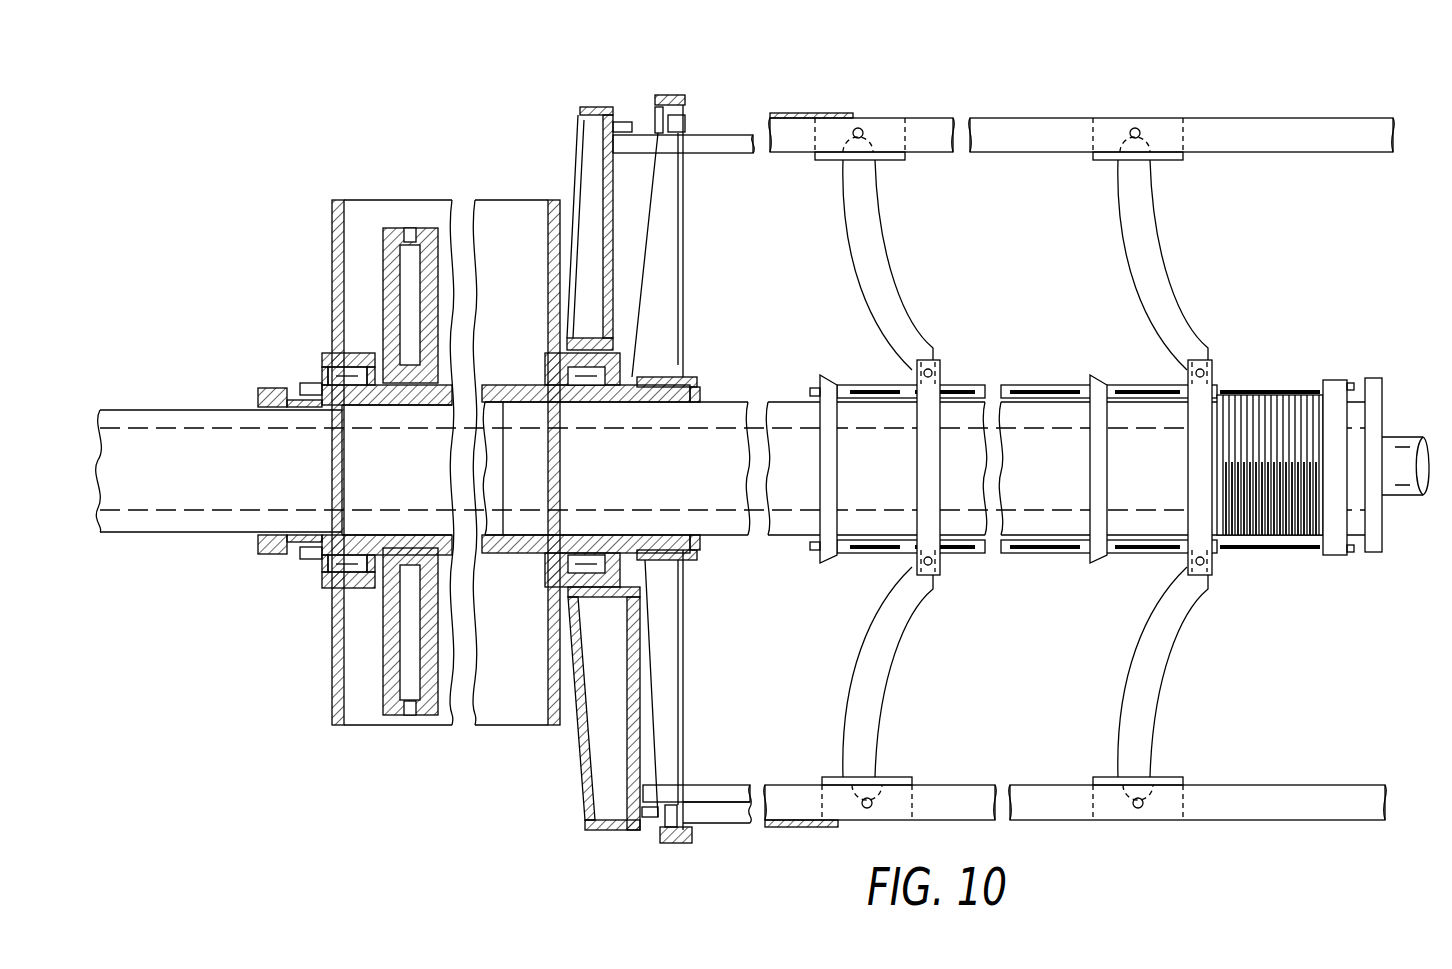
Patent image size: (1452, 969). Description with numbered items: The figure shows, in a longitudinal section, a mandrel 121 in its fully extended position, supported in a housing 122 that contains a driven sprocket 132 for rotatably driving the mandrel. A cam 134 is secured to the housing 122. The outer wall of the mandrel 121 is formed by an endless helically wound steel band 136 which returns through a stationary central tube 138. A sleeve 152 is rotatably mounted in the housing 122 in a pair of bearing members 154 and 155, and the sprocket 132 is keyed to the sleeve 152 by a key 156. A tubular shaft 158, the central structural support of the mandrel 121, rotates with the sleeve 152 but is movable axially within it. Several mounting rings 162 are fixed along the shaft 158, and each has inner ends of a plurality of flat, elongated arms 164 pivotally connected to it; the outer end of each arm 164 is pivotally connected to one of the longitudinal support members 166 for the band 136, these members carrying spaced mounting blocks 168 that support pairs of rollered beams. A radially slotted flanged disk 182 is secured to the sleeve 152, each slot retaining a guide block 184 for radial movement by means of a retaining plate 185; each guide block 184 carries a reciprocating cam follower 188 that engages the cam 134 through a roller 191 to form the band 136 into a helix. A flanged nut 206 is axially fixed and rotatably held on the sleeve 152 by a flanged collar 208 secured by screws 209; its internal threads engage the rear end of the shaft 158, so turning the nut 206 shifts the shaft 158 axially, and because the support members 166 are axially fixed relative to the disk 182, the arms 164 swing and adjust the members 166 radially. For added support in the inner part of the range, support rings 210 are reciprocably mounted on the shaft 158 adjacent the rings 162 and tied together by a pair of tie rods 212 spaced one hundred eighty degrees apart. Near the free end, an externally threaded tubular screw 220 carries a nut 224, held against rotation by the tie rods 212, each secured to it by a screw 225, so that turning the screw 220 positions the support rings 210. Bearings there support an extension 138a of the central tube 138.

The mandrel 121 is at (953, 102).
The housing 122 is at (495, 200).
The driven sprocket 132 is at (384, 230).
The cam 134 is at (583, 107).
The endless helically wound steel band 136 is at (793, 113).
The stationary central tube 138 is at (98, 420).
The extension of the stationary central tube 138a is at (1392, 440).
The sleeve 152 is at (546, 380).
The bearing member 154 is at (324, 572).
The bearing member 155 is at (546, 568).
The key 156 is at (382, 556).
The tubular shaft 158 is at (812, 390).
The mounting ring 162 is at (940, 376).
The arm 164 is at (878, 243).
The longitudinal support member 166 is at (1000, 152).
The mounting block 168 is at (888, 160).
The radially slotted flanged disk 182 is at (667, 96).
The guide block 184 is at (682, 127).
The retaining plate 185 is at (653, 108).
The cam follower 188 is at (640, 132).
The roller 191 is at (618, 121).
The flanged nut 206 is at (262, 392).
The flanged collar 208 is at (325, 353).
The screw 209 is at (318, 386).
The support ring 210 is at (828, 378).
The tie rod 212 is at (1055, 384).
The tubular screw 220 is at (1400, 340).
The nut 224 is at (1332, 374).
The screw 225 is at (1353, 383).